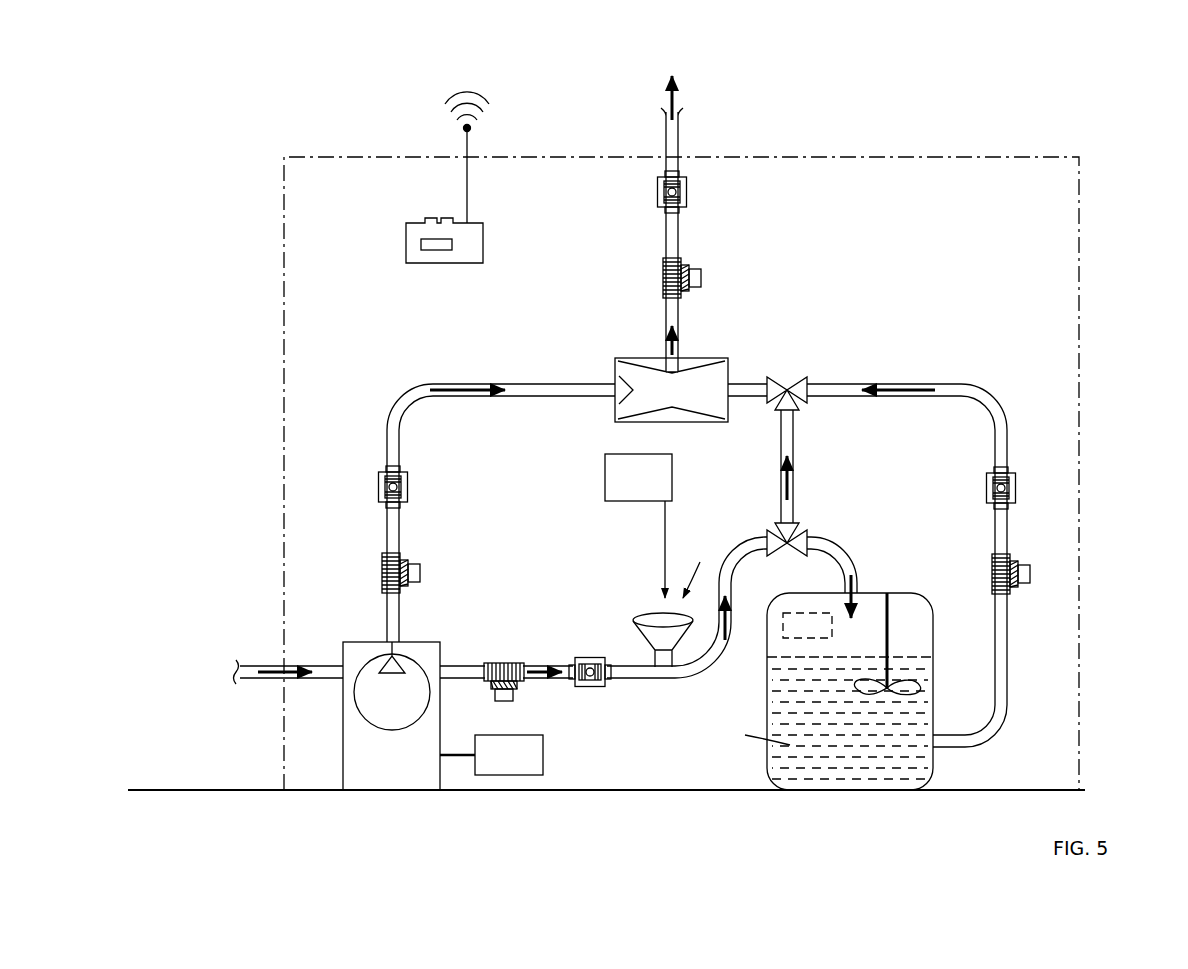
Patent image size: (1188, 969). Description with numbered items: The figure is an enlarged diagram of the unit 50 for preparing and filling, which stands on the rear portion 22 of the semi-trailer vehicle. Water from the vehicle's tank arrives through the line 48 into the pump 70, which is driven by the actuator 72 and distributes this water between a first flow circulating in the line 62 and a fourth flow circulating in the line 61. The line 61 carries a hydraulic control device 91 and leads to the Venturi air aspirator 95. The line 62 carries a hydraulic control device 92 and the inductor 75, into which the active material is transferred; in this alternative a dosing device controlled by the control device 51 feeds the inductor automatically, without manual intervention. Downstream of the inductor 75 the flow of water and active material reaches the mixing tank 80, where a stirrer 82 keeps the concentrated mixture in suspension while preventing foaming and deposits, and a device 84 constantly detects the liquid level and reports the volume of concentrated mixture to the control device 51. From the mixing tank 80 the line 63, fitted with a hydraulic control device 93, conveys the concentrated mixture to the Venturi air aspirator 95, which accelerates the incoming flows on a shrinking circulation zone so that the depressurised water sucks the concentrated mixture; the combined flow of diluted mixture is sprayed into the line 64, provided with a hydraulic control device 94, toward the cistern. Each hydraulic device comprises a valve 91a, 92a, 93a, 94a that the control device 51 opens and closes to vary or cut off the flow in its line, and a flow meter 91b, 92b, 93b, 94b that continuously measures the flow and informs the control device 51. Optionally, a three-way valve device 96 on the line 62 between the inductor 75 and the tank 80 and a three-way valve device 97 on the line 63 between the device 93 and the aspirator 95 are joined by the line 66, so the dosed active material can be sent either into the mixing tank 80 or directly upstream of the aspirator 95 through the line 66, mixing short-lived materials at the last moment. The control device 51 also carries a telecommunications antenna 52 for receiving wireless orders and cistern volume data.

The rear portion 22 is at (180, 789).
The line 48 is at (258, 664).
The unit 50 is at (246, 172).
The control device 51 is at (430, 231).
The telecommunications antenna 52 is at (484, 135).
The line 61 is at (405, 400).
The line 62 is at (641, 680).
The line 63 is at (992, 393).
The line 64 is at (670, 142).
The line 66 is at (796, 421).
The pump 70 is at (458, 716).
The actuator 72 is at (491, 755).
The inductor 75 is at (653, 610).
The mixing tank 80 is at (903, 588).
The stirrer 82 is at (928, 685).
The device for detecting the level 84 is at (783, 632).
The hydraulic control device 91 is at (295, 529).
The valve 91a is at (375, 577).
The flow meter 91b is at (370, 487).
The hydraulic control device 92 is at (547, 622).
The valve 92a is at (504, 660).
The flow meter 92b is at (590, 658).
The hydraulic control device 93 is at (1079, 530).
The valve 93a is at (1036, 575).
The flow meter 93b is at (1022, 488).
The hydraulic control device 94 is at (743, 234).
The valve 94a is at (702, 278).
The flow meter 94b is at (688, 192).
The Venturi air aspirator 95 is at (645, 378).
The device 96 is at (766, 526).
The device 97 is at (796, 372).